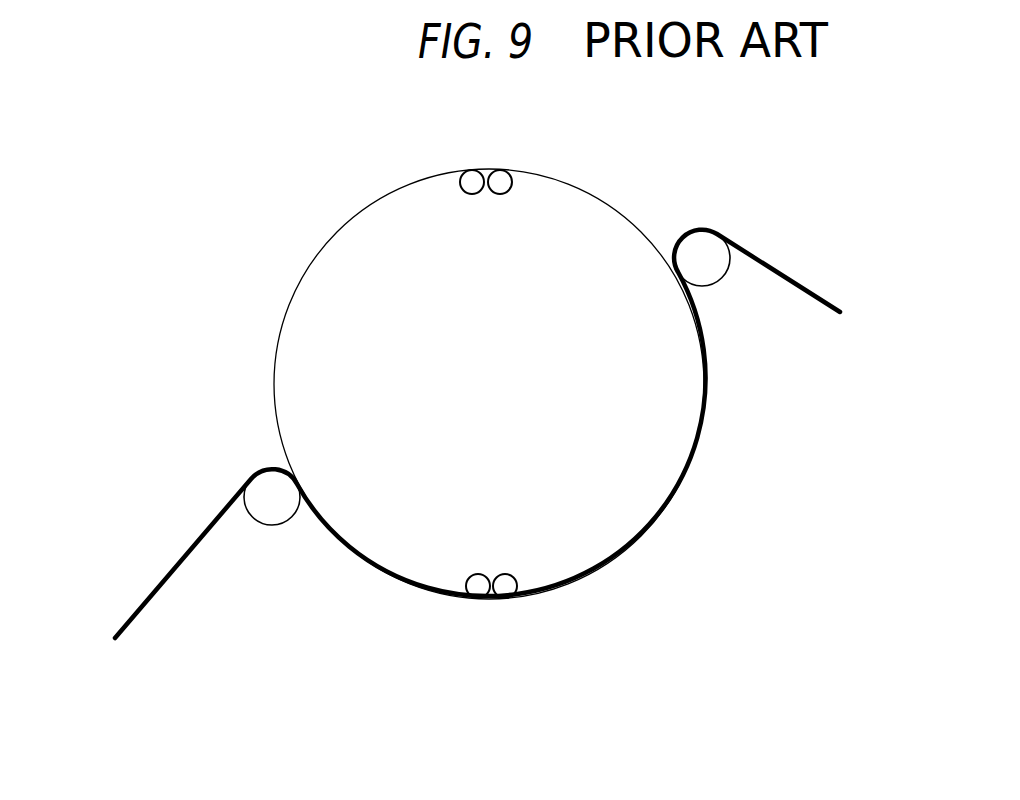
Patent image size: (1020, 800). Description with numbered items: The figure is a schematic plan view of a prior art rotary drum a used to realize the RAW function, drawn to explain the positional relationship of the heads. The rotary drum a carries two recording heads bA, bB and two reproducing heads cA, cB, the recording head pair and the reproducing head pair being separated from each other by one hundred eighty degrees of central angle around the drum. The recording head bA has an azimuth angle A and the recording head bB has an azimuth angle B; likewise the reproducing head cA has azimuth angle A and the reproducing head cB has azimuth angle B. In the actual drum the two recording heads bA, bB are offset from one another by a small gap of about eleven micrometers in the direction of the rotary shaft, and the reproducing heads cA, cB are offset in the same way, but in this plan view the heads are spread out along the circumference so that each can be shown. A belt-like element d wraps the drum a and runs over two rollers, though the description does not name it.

The rotary drum a is at (597, 200).
The recording head bA is at (470, 171).
The recording head bB is at (500, 171).
The reproducing head cA is at (505, 599).
The reproducing head cB is at (474, 599).
The transfer belt d is at (705, 415).